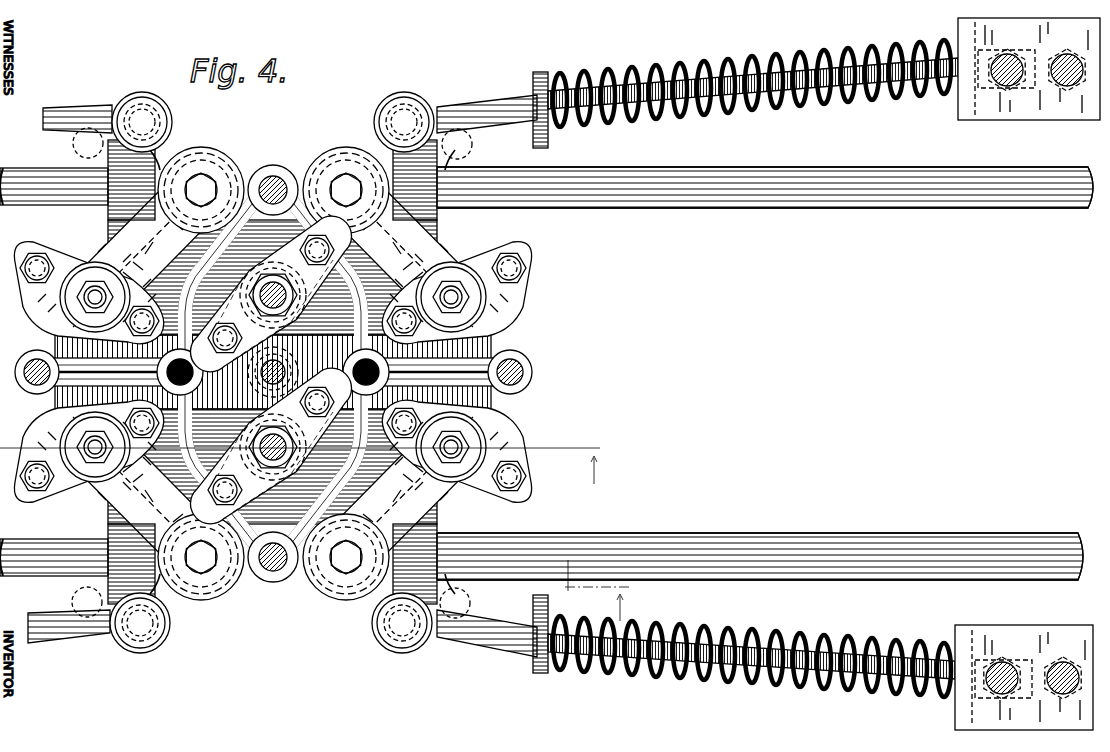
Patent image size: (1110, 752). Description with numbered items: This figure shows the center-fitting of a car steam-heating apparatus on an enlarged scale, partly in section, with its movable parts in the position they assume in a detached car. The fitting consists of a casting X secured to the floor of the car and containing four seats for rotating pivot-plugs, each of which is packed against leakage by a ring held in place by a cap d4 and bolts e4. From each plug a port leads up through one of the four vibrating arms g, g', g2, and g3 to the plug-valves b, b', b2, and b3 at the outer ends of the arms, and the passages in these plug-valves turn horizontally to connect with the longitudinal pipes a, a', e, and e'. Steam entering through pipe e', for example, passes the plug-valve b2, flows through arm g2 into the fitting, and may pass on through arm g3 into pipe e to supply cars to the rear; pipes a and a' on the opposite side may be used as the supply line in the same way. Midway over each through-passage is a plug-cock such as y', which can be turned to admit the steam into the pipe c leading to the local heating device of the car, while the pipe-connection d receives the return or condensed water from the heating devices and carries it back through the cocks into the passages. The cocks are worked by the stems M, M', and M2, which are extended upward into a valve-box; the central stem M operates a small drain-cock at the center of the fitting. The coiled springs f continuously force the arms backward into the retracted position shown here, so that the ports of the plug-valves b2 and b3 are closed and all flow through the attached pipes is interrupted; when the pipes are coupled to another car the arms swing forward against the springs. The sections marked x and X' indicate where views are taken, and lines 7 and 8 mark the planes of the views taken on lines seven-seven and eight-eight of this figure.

The pipe a is at (743, 185).
The pipe a' is at (77, 183).
The plug-valve b is at (346, 190).
The plug-valve b' is at (201, 178).
The plug-valve b2 is at (200, 590).
The plug-valve b3 is at (324, 588).
The pipe c is at (272, 372).
The pipe-connection d is at (364, 350).
The cap d4 is at (50, 316).
The pipe e is at (738, 560).
The pipe e' is at (77, 559).
The bolt e4 is at (526, 269).
The spring f is at (816, 374).
The arm g is at (401, 247).
The arm g' is at (144, 247).
The arm g2 is at (144, 496).
The arm g3 is at (401, 496).
The stem M is at (255, 372).
The stem M' is at (251, 295).
The stem M2 is at (288, 447).
The pivot pin x is at (276, 178).
The casting X is at (315, 135).
The eye pivot X' is at (293, 481).
The plug valve or cock y' is at (270, 370).
The section line 7 7 is at (605, 590).
The section line 8 8 is at (308, 464).